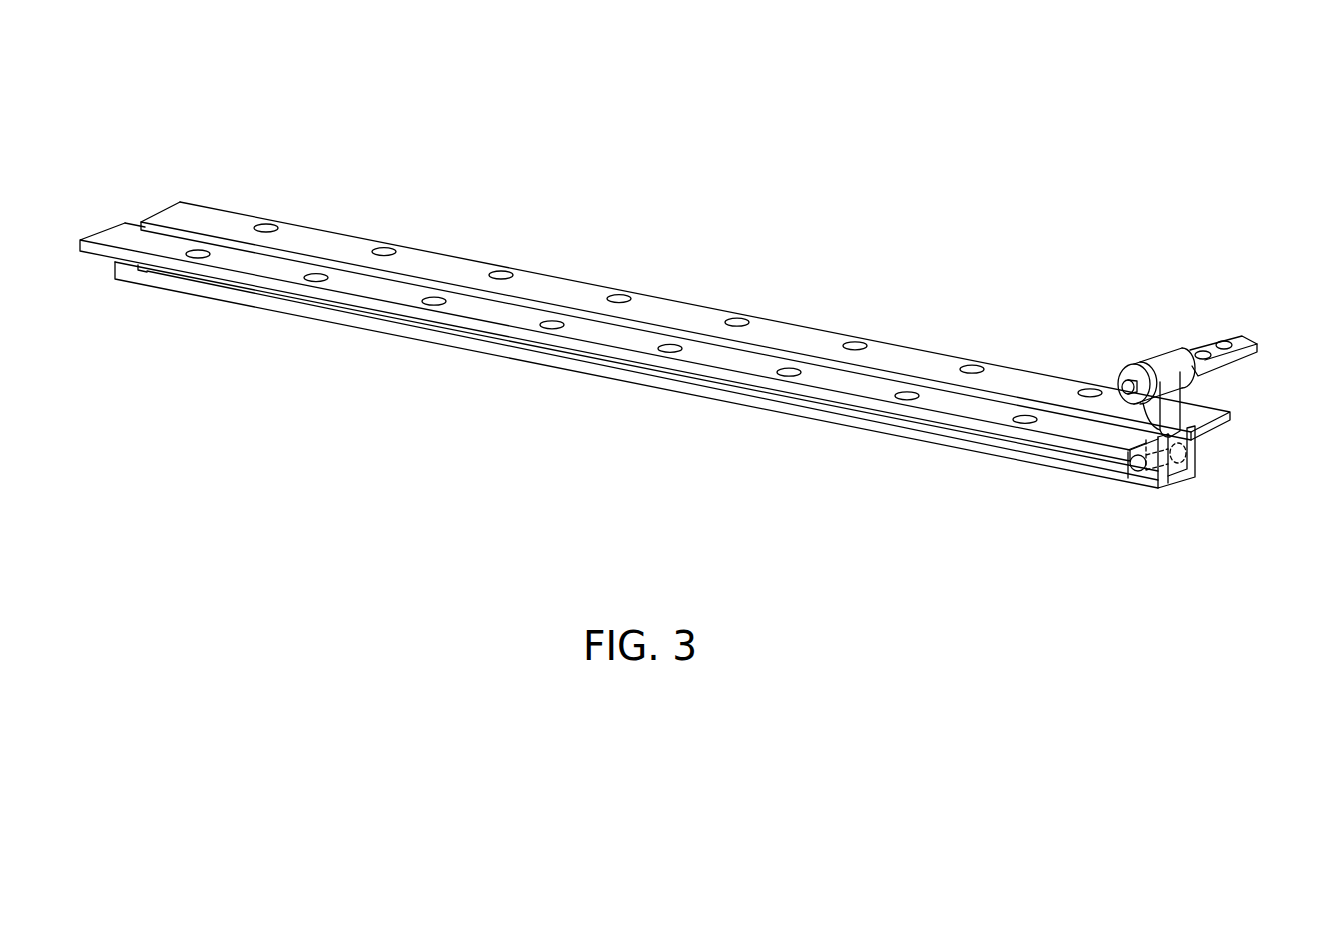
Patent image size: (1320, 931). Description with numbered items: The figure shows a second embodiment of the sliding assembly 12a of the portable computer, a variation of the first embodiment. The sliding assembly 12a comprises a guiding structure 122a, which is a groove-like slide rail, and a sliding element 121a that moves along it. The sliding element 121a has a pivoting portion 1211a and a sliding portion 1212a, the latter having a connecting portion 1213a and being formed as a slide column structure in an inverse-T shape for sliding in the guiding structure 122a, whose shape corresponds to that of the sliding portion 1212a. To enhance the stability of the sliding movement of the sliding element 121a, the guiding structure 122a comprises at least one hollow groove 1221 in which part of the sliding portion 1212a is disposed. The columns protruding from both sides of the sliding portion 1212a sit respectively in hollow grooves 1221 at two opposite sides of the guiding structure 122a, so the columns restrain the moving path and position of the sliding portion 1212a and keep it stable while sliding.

The sliding assembly 12a is at (566, 128).
The guiding structure 122a is at (430, 258).
The hollow groove 1221 is at (600, 356).
The sliding element 121a is at (1090, 295).
The pivoting portion 1211a is at (1172, 365).
The sliding portion 1212a is at (1140, 468).
The connecting portion 1213a is at (1185, 433).